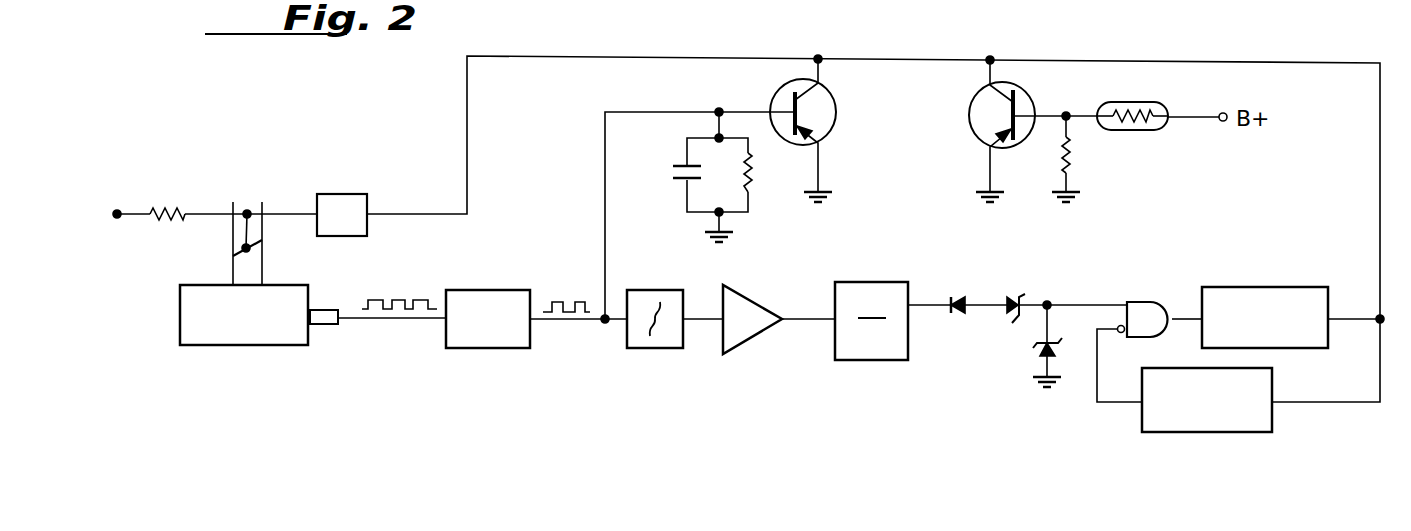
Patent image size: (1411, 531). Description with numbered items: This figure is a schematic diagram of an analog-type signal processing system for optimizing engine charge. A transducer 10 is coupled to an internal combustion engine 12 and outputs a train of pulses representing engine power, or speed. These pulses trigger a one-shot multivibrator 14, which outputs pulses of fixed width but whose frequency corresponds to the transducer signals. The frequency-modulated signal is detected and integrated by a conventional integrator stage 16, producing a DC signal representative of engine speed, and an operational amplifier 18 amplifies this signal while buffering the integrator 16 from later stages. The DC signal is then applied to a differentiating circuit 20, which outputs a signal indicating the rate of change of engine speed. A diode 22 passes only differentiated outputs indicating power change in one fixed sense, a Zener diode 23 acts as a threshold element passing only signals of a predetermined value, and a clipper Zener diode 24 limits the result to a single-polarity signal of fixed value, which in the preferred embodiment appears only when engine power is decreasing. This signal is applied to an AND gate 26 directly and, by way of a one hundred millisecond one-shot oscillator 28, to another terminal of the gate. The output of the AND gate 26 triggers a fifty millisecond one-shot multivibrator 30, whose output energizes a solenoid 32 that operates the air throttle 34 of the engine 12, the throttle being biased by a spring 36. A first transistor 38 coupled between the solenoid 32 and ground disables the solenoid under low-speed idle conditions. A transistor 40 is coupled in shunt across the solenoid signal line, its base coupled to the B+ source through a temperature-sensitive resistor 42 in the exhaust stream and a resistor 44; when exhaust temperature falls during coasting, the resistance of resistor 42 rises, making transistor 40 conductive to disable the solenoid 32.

The transducer 10 is at (327, 323).
The internal combustion engine 12 is at (192, 313).
The one-shot multivibrator 14 is at (468, 293).
The integrator stage 16 is at (638, 300).
The operational amplifier 18 is at (740, 330).
The differentiating circuit 20 is at (893, 350).
The diode 22 is at (960, 296).
The Zener diode 23 is at (1012, 295).
The Zener diode 24 is at (1042, 352).
The AND gate 26 is at (1144, 303).
The 100 millisecond one-shot oscillator 28 is at (1152, 416).
The 50 millisecond one-shot multivibrator 30 is at (1270, 288).
The solenoid 32 is at (343, 195).
The air throttle 34 is at (253, 247).
The spring 36 is at (170, 207).
The first transistor 38 is at (820, 119).
The transistor 40 is at (992, 118).
The temperature-sensitive resistor 42 is at (1153, 118).
The resistor 44 is at (1076, 158).